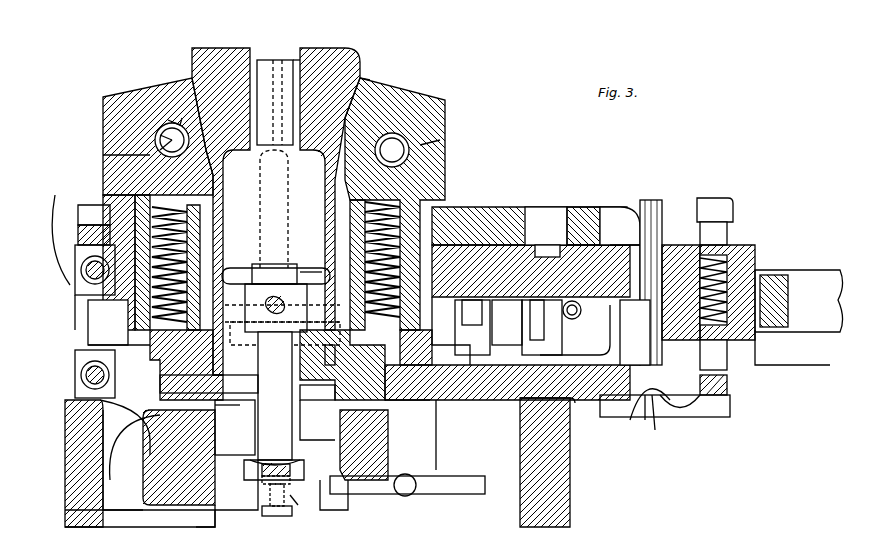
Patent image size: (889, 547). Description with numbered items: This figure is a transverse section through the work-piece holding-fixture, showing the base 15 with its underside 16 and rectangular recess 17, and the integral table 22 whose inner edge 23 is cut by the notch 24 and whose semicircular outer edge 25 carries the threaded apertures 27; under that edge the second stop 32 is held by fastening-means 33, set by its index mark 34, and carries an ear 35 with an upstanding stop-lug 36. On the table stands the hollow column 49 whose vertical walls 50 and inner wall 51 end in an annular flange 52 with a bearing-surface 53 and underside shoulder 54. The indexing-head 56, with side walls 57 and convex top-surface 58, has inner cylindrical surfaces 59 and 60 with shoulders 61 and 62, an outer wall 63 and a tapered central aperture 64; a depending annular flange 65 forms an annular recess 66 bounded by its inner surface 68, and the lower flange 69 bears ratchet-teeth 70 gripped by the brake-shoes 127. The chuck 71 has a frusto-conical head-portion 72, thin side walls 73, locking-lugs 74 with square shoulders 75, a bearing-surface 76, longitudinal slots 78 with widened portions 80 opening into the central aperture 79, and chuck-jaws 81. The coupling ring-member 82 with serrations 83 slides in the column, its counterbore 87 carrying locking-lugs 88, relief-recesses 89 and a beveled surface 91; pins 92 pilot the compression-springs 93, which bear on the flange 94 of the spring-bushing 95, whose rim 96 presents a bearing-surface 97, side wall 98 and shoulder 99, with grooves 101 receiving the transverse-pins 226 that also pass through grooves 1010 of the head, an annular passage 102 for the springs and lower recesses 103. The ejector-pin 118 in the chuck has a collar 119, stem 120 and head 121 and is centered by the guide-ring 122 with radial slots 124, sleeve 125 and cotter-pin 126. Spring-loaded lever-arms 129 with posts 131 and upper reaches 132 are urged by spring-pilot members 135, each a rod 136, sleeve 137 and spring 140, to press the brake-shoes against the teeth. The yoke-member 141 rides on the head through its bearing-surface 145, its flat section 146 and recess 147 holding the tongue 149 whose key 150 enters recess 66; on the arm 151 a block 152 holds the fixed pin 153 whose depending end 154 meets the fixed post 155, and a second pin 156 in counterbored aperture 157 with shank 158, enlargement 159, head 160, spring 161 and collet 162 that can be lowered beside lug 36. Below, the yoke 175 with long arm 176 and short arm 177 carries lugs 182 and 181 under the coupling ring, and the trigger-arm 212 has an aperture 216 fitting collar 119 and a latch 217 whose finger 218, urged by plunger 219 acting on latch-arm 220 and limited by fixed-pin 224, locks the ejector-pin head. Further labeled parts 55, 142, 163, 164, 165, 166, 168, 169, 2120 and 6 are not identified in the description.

The base 15 is at (70, 480).
The underside 16 is at (92, 528).
The recess 17 is at (522, 432).
The table portion 22 is at (555, 362).
The inner edge 23 is at (66, 500).
The notch 24 is at (65, 408).
The outer edge 25 is at (668, 416).
The internally-threaded apertures 27 is at (643, 418).
The second stop 32 is at (680, 416).
The fastening-means 33 is at (658, 427).
The index mark 34 is at (640, 427).
The ear 35 is at (732, 412).
The stop-lug 36 is at (728, 392).
The column 49 is at (440, 190).
The vertical walls 50 is at (150, 215).
The inner wall 51 is at (88, 345).
The annular flange 52 is at (325, 185).
The top annular surface 53 is at (405, 165).
The annular shoulder 54 is at (325, 200).
The cap 55 is at (445, 102).
The indexing-head 56 is at (445, 110).
The side walls 57 is at (135, 170).
The convex top-surface 58 is at (400, 135).
The skirt 59 is at (88, 322).
The cylindrical surface 60 is at (170, 123).
The annular shoulder 61 is at (325, 165).
The annular shoulder 62 is at (182, 118).
The outer wall 63 is at (455, 205).
The central aperture 64 is at (356, 62).
The annular flange 65 is at (78, 237).
The annular recess 66 is at (78, 212).
The inner cylindrical surface 68 is at (76, 262).
The annular flange 69 is at (75, 372).
The ratchet-teeth 70 is at (90, 352).
The chuck 71 is at (365, 78).
The head-portion 72 is at (322, 55).
The side walls 73 is at (223, 200).
The locking-lugs 74 is at (318, 391).
The square shoulder 75 is at (282, 335).
The cylindrical bearing-surface 76 is at (330, 355).
The longitudinal slots 78 is at (276, 58).
The central aperture 79 is at (300, 58).
The widened portion 80 is at (274, 209).
The chuck-jaws 81 is at (200, 70).
The chuck-coupling ring-member 82 is at (165, 440).
The serrations 83 is at (405, 402).
The counterbore 87 is at (216, 436).
The locking-lugs 88 is at (262, 355).
The relief-recess 89 is at (217, 415).
The beveled surface 91 is at (335, 405).
The pin 92 is at (213, 230).
The coil compression-spring 93 is at (222, 165).
The annular flange 94 is at (440, 175).
The spring-retaining bushing 95 is at (213, 245).
The rim 96 is at (400, 95).
The bearing-surface 97 is at (385, 90).
The outer side wall 98 is at (405, 140).
The annular shoulder 99 is at (103, 155).
The semicylindrical grooves 101 is at (410, 118).
The annular passage 102 is at (460, 332).
The rectangular recesses 103 is at (282, 305).
The ejector-pin 118 is at (209, 415).
The collar portion 119 is at (262, 468).
The stem-portion 120 is at (270, 494).
The head 121 is at (290, 518).
The guide-ring 122 is at (313, 261).
The radial slots 124 is at (248, 270).
The sleeve-portion 125 is at (274, 381).
The cotter-pin 126 is at (274, 296).
The brake-shoes 127 is at (474, 327).
The lever-arm 129 is at (75, 380).
The post 131 is at (75, 300).
The upper reach 132 is at (80, 270).
The spring-pilot member 135 is at (105, 470).
The rod 136 is at (66, 428).
The sleeve 137 is at (120, 440).
The coil compression-spring 140 is at (96, 317).
The yoke-member 141 is at (507, 322).
The bracket 142 is at (612, 207).
The semicircular bearing-surface 145 is at (560, 207).
The flat section 146 is at (688, 245).
The rectangular recess 147 is at (620, 226).
The tongue-shaped member 149 is at (582, 210).
The key 150 is at (455, 210).
The arm 151 is at (680, 245).
The block 152 is at (755, 255).
The pin 153 is at (652, 207).
The depending end 154 is at (630, 328).
The fixed post 155 is at (630, 345).
The second pin 156 is at (733, 230).
The counterbored aperture 157 is at (730, 345).
The shank 158 is at (728, 266).
The enlargement 159 is at (733, 240).
The head 160 is at (735, 210).
The coil-spring 161 is at (760, 300).
The collet 162 is at (728, 368).
The corner 163 is at (572, 418).
The arm 164 is at (810, 285).
The plate 165 is at (556, 207).
The plate 166 is at (500, 207).
The block 168 is at (546, 232).
The plate 169 is at (575, 207).
The yoke-shaped member 175 is at (209, 526).
The long arm 176 is at (240, 512).
The short arm 177 is at (388, 440).
The upturned lug 181 is at (438, 424).
The upstanding lug 182 is at (145, 500).
The trigger-arm 212 is at (440, 448).
The aperture 216 is at (262, 480).
The latch-member 217 is at (330, 513).
The finger 218 is at (304, 510).
The spring-loaded plunger 219 is at (412, 496).
The latch-arm 220 is at (475, 496).
The fixed-pin 224 is at (352, 512).
The transverse-pins 226 is at (425, 110).
The semicylindrical grooves 1010 is at (405, 152).
The cup 2120 is at (290, 460).
The ball 6 is at (226, 297).